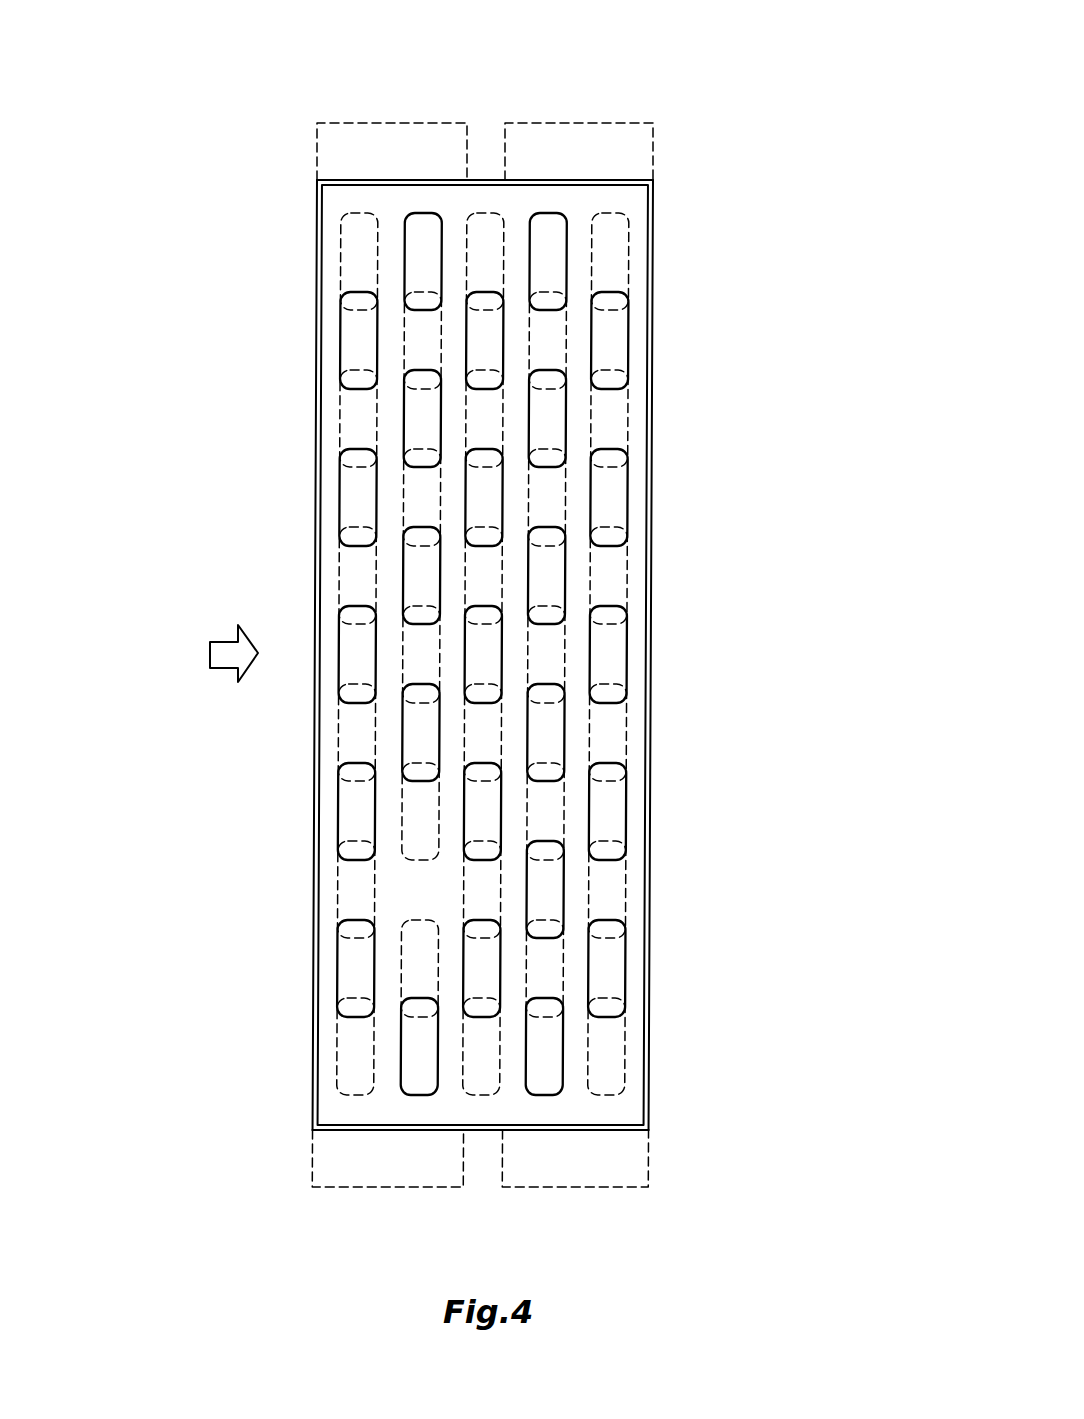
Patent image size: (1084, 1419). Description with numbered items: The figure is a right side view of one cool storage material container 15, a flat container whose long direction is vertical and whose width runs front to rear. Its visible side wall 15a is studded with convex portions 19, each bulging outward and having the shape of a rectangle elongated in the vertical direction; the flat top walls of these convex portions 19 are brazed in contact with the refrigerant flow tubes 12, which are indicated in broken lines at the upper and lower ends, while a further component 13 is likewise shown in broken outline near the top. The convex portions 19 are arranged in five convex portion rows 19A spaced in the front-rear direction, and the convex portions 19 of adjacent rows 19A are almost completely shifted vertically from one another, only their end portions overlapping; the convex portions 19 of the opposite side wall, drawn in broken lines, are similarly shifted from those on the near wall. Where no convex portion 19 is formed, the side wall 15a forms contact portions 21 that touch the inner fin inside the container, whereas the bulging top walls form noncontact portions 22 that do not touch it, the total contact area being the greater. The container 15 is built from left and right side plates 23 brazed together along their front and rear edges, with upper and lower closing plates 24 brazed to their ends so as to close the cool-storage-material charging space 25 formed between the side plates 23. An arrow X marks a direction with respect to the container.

The refrigerant flow tube 12 is at (432, 93).
The connecting portion 13 is at (317, 123).
The cool storage material container 15 is at (515, 639).
The side wall 15a is at (613, 417).
The convex portion 19 is at (483, 668).
The convex portion row 19A is at (353, 1005).
The contact portion 21 is at (625, 1107).
The noncontact portion 22 is at (550, 882).
The side plate 23 is at (325, 982).
The closing plate 24 is at (640, 178).
The cool-storage-material charging space 25 is at (657, 217).
The direction X is at (222, 662).